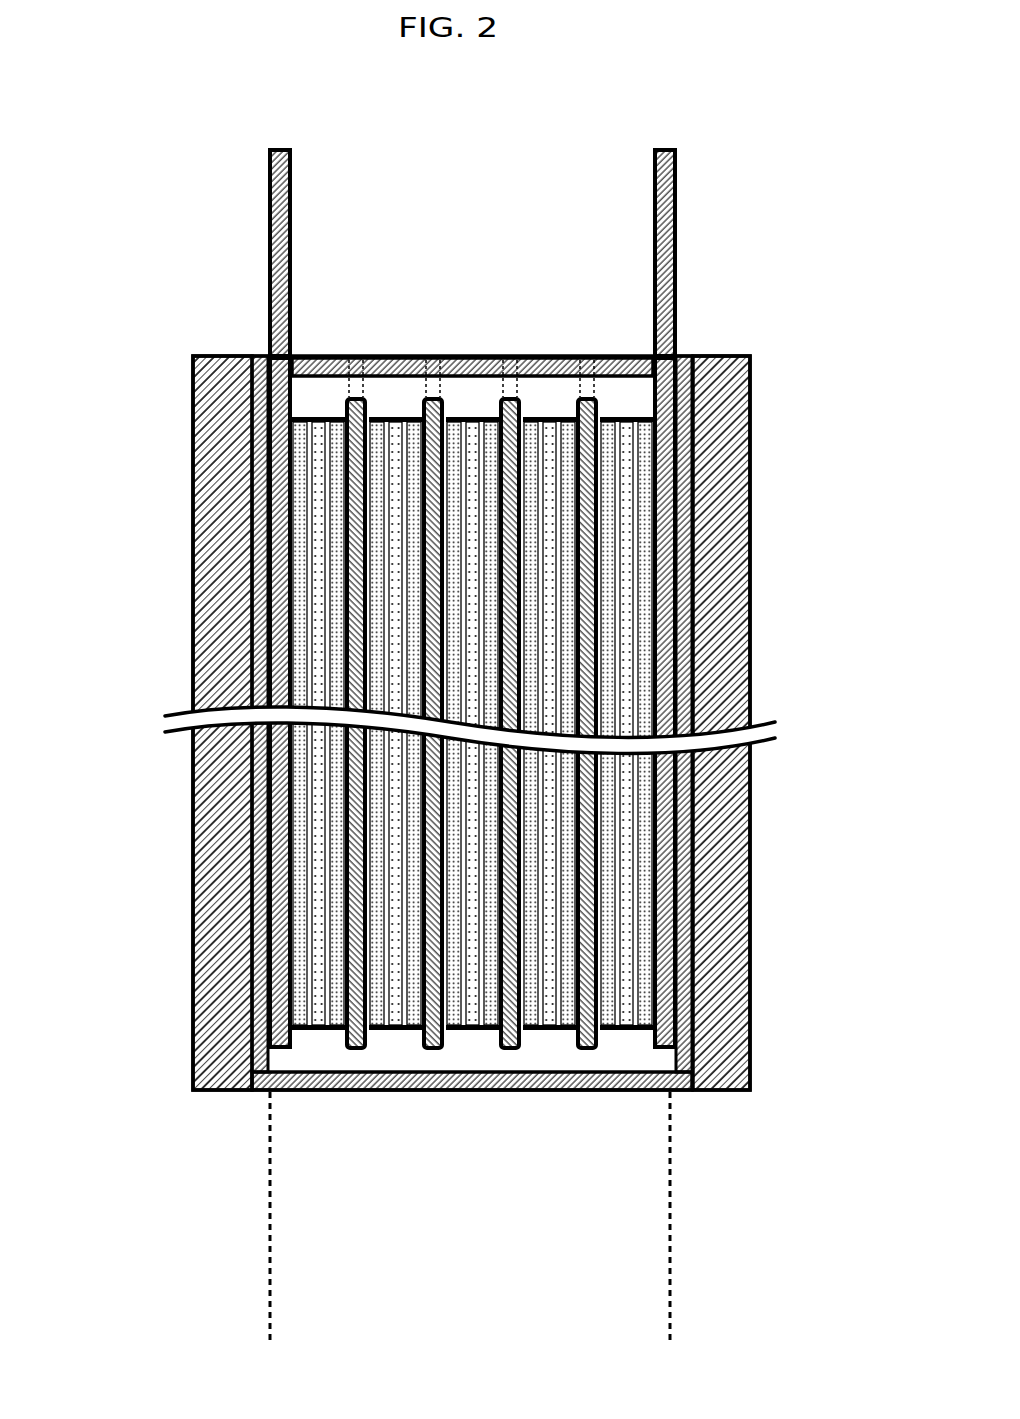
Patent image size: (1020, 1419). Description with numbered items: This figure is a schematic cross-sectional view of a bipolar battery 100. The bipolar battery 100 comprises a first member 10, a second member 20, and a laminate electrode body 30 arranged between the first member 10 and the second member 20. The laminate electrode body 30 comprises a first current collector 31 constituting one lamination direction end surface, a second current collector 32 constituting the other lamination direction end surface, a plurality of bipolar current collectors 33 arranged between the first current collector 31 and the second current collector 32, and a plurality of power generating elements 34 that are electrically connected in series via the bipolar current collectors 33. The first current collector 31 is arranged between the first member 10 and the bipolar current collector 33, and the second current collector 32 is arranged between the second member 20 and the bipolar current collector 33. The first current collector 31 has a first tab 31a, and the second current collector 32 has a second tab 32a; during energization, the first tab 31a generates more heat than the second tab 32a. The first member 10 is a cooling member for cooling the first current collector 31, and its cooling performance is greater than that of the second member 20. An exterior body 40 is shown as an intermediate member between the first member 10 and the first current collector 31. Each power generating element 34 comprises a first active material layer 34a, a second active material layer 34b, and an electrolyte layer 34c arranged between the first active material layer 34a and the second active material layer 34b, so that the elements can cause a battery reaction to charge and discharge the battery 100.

The bipolar battery 100 is at (496, 103).
The first member 10 is at (193, 525).
The second member 20 is at (750, 525).
The laminate electrode body 30 is at (670, 1278).
The first current collector 31 is at (278, 452).
The first tab 31a is at (265, 216).
The second current collector 32 is at (662, 451).
The second tab 32a is at (679, 216).
The bipolar current collector 33 is at (588, 356).
The power generating element 34 is at (472, 662).
The first active material layer 34a is at (300, 1030).
The second active material layer 34b is at (337, 1030).
The electrolyte layer 34c is at (318, 1030).
The exterior body 40 is at (248, 1070).